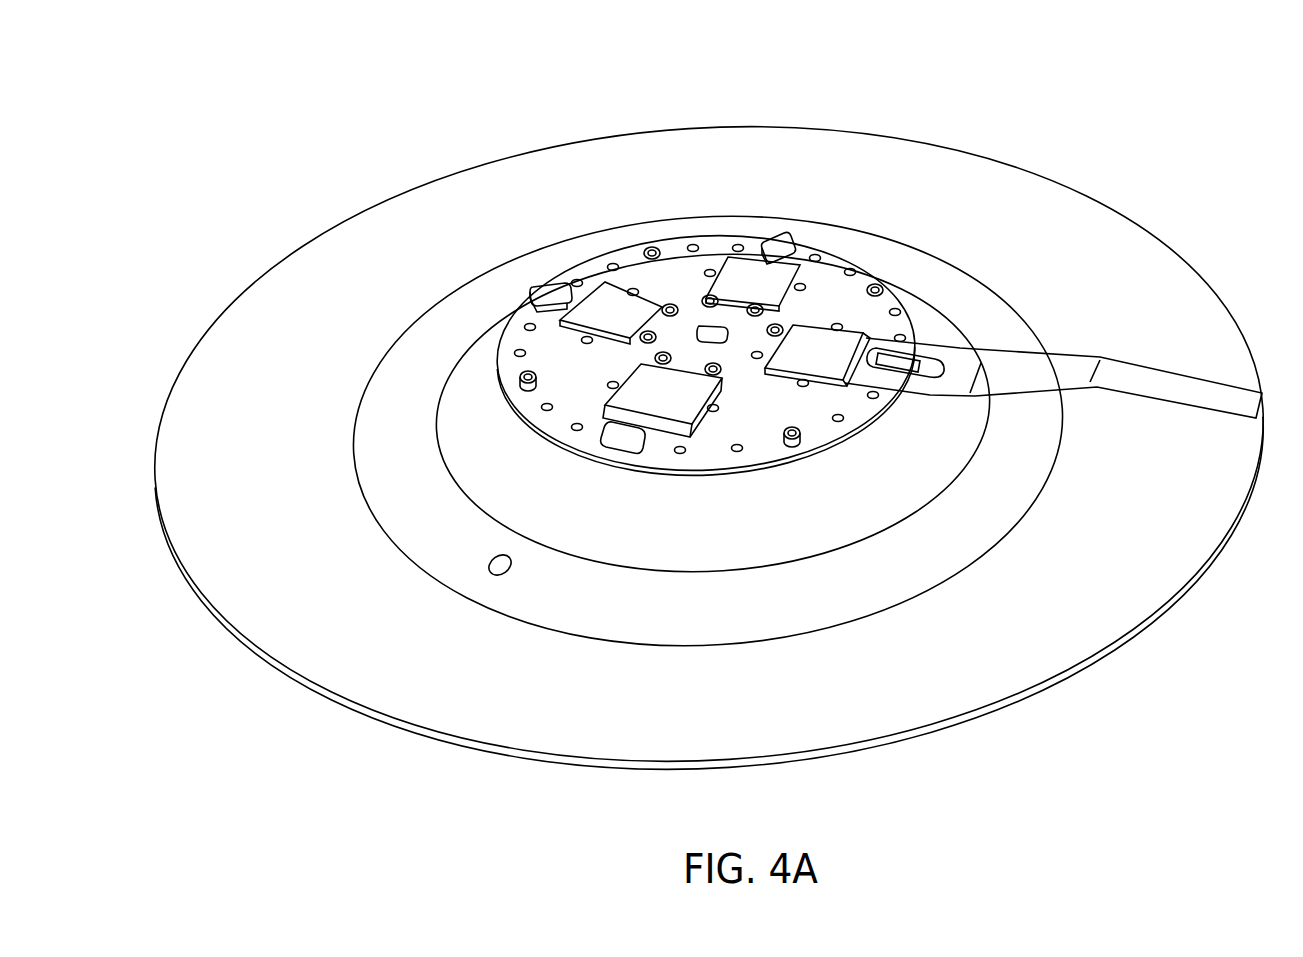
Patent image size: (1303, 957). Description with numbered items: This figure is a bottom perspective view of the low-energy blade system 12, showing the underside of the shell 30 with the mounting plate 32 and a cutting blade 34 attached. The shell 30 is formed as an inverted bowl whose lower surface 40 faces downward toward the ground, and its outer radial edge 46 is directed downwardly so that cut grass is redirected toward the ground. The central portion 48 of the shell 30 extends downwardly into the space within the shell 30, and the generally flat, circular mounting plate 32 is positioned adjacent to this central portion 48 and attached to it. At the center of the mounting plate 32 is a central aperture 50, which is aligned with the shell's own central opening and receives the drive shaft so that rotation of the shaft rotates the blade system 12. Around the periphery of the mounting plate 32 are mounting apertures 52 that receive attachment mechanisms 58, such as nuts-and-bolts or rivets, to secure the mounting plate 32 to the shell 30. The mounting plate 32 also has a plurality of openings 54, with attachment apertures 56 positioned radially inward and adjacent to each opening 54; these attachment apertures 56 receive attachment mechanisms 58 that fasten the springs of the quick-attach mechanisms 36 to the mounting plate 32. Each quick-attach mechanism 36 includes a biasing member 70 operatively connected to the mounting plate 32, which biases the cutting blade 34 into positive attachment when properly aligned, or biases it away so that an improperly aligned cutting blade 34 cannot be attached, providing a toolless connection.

The low-energy blade system 12 is at (767, 101).
The shell 30 is at (872, 160).
The lower surface 40 is at (928, 168).
The radial edge 46 is at (511, 752).
The central portion 48 is at (713, 476).
The quick-attach mechanism 36 is at (857, 420).
The mounting plate 32 is at (688, 239).
The central aperture 50 is at (712, 328).
The opening 54 is at (668, 305).
The attachment mechanism 58 is at (712, 296).
The mounting aperture 52 is at (526, 390).
The attachment aperture 56 is at (778, 325).
The biasing member 70 is at (837, 352).
The cutting blade 34 is at (1142, 382).